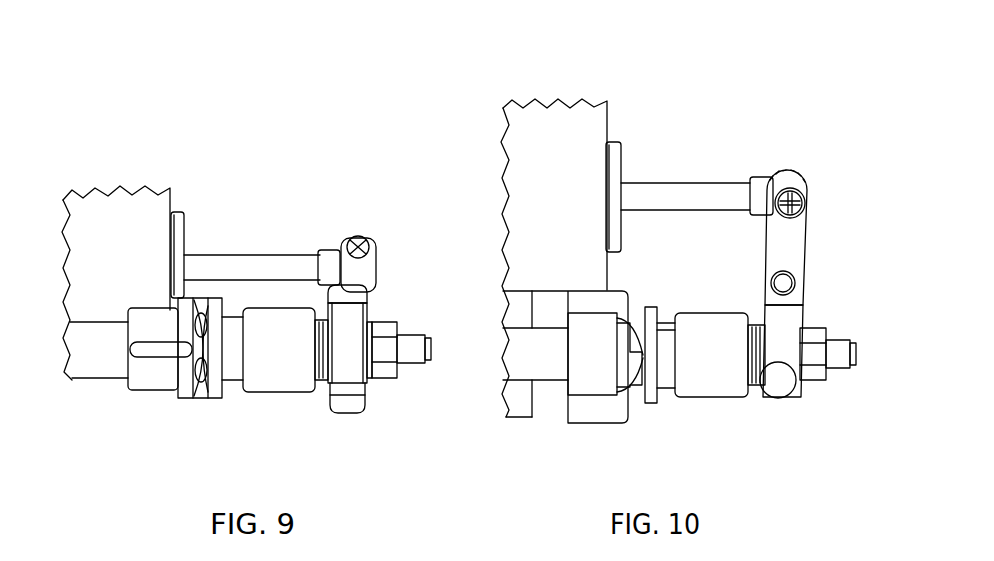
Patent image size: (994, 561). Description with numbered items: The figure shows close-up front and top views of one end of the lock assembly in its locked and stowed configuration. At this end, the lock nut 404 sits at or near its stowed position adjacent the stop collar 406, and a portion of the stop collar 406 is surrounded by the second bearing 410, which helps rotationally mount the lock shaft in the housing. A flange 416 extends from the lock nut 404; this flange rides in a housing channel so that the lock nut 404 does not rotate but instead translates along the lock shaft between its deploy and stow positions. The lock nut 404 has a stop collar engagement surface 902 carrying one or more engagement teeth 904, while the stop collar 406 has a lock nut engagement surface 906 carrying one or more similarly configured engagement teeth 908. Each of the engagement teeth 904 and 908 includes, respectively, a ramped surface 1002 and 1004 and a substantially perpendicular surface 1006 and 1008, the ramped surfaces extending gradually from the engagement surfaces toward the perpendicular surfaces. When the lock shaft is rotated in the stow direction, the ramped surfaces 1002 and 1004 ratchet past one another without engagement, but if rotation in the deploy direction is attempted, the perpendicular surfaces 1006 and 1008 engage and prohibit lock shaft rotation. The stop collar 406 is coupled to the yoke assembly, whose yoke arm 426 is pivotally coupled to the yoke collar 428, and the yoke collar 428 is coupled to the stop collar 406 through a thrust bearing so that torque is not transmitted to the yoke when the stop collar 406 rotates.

In FIG. 9, the engagement teeth 904 is at (197, 303).
In FIG. 9, the stop collar engagement surface 902 is at (193, 318).
In FIG. 9, the lock nut engagement surface 906 is at (205, 356).
In FIG. 9, the lock nut 404 is at (147, 392).
In FIG. 10, the lock nut 404 is at (570, 370).
In FIG. 9, the engagement teeth 908 is at (202, 387).
In FIG. 9, the stop collar 406 is at (232, 382).
In FIG. 10, the stop collar 406 is at (657, 307).
In FIG. 9, the second bearing 410 is at (295, 392).
In FIG. 10, the second bearing 410 is at (731, 368).
In FIG. 10, the ramped surface 1004 is at (637, 305).
In FIG. 10, the substantially perpendicular surface 1006 is at (615, 335).
In FIG. 10, the ramped surface 1002 is at (636, 372).
In FIG. 10, the substantially perpendicular surface 1008 is at (660, 380).
In FIG. 10, the flange 416 is at (597, 424).
In FIG. 10, the yoke arm 426 is at (807, 233).
In FIG. 10, the yoke collar 428 is at (803, 310).